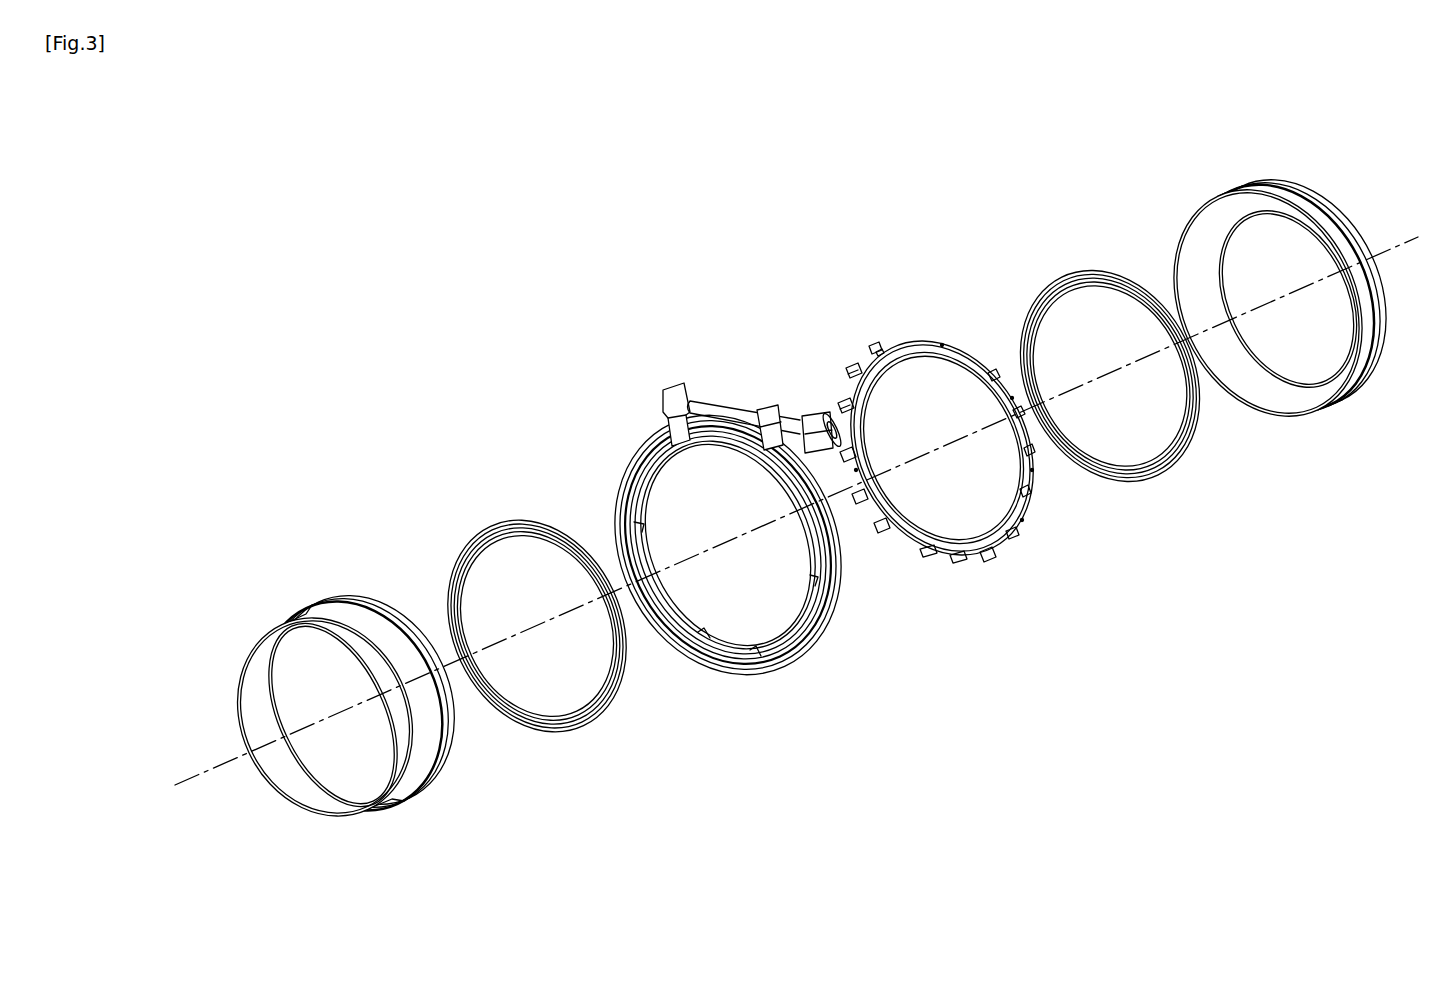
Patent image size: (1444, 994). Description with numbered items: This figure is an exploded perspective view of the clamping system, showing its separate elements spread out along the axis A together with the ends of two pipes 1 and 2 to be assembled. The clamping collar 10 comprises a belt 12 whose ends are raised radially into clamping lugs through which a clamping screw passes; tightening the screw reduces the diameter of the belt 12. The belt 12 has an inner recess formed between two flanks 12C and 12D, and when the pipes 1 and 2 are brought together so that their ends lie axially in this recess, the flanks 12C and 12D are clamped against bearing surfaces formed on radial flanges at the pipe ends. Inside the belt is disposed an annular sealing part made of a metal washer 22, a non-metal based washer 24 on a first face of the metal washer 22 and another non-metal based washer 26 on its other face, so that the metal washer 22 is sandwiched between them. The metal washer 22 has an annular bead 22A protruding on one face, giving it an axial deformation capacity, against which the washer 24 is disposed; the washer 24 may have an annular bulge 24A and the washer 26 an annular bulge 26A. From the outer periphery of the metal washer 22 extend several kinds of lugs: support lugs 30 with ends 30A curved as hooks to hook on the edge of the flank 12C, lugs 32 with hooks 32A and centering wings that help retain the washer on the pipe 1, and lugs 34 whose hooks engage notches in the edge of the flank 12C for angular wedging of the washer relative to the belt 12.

The pipe 1 is at (284, 590).
The pipe 2 is at (1255, 166).
The clamping collar 10 is at (718, 730).
The belt 12 is at (711, 545).
The flank 12C is at (638, 469).
The flank 12D is at (658, 464).
The metal washer 22 is at (1008, 426).
The annular bead 22A is at (929, 341).
The non-metal based washer 24 is at (536, 631).
The annular bulge 24A is at (543, 521).
The non-metal based washer 26 is at (1109, 362).
The annular bulge 26A is at (1074, 270).
The support lug 30 is at (878, 350).
The hook 30A is at (874, 352).
The lug 32 is at (848, 373).
The hook 32A is at (990, 560).
The lug 34 is at (950, 562).
The axis A is at (183, 790).